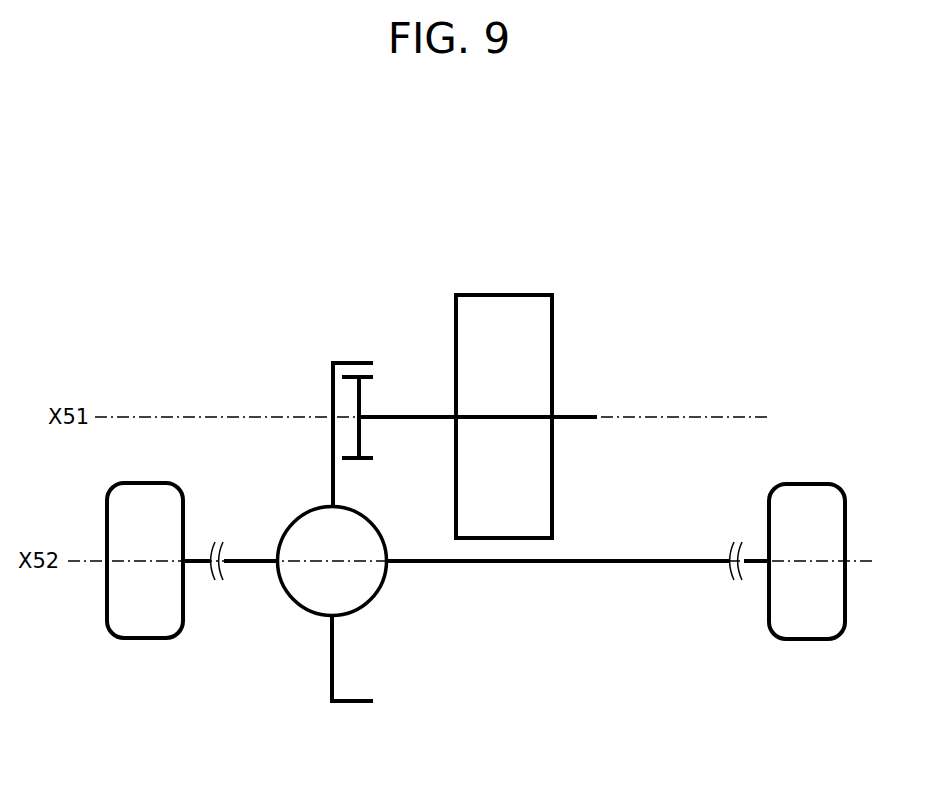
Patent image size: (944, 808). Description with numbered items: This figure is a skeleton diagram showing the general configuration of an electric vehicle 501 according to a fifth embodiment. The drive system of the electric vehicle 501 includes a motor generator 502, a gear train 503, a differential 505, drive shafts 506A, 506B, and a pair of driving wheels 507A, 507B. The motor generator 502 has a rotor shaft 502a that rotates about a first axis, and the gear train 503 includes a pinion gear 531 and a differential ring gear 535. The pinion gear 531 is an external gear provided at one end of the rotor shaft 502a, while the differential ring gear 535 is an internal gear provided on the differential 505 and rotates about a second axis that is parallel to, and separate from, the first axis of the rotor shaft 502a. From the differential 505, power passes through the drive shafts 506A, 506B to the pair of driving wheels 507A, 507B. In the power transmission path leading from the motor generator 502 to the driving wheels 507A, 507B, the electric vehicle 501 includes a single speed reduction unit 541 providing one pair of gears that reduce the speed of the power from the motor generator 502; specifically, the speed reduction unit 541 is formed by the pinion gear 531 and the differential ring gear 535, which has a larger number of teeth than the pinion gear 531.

The electric vehicle 501 is at (504, 190).
The motor generator 502 is at (552, 313).
The rotor shaft 502a is at (412, 422).
The gear train 503 is at (308, 267).
The differential 505 is at (293, 518).
The drive shaft 506A is at (560, 565).
The drive shaft 506B is at (238, 565).
The driving wheel 507A is at (803, 642).
The driving wheel 507B is at (128, 640).
The pinion gear 531 is at (360, 397).
The differential ring gear 535 is at (333, 380).
The speed reduction unit 541 is at (384, 366).